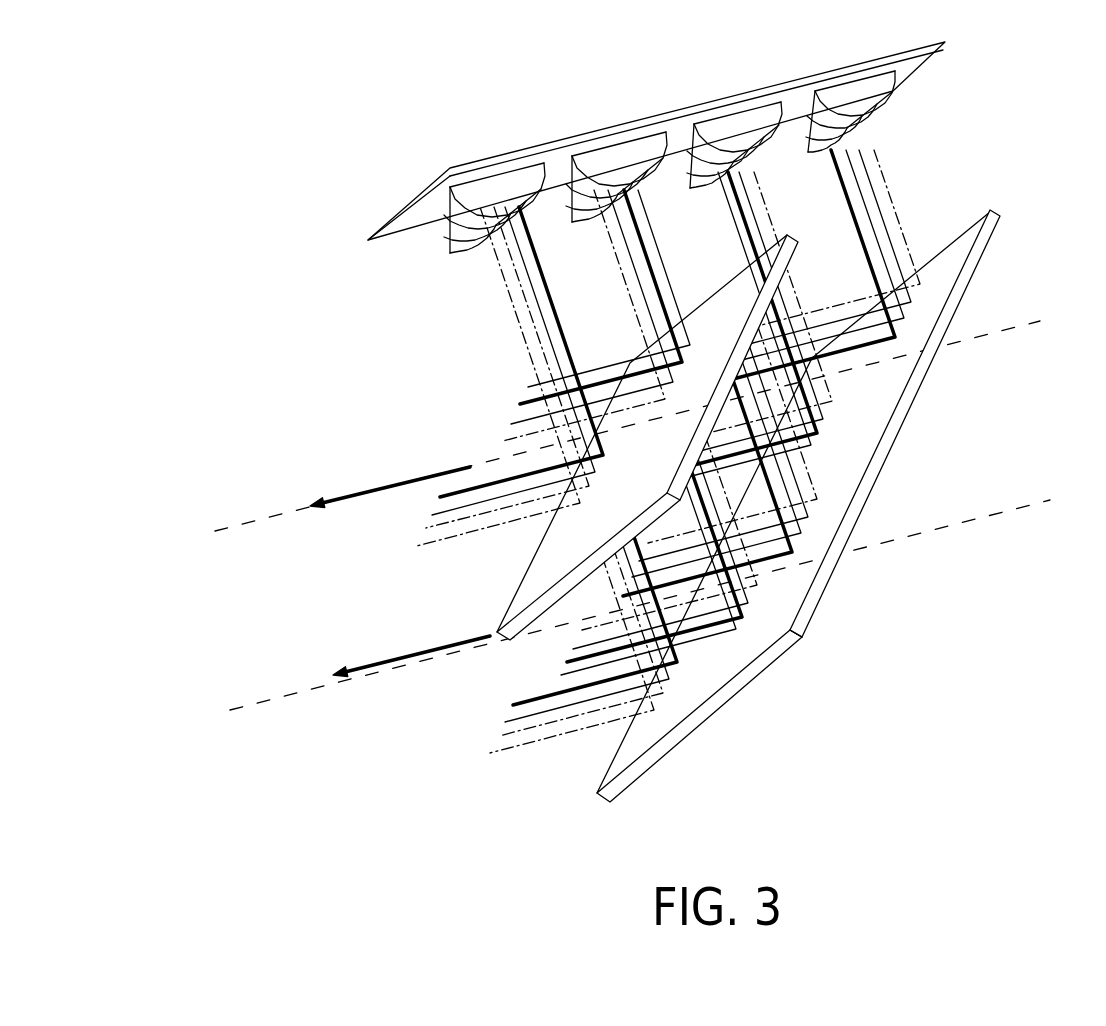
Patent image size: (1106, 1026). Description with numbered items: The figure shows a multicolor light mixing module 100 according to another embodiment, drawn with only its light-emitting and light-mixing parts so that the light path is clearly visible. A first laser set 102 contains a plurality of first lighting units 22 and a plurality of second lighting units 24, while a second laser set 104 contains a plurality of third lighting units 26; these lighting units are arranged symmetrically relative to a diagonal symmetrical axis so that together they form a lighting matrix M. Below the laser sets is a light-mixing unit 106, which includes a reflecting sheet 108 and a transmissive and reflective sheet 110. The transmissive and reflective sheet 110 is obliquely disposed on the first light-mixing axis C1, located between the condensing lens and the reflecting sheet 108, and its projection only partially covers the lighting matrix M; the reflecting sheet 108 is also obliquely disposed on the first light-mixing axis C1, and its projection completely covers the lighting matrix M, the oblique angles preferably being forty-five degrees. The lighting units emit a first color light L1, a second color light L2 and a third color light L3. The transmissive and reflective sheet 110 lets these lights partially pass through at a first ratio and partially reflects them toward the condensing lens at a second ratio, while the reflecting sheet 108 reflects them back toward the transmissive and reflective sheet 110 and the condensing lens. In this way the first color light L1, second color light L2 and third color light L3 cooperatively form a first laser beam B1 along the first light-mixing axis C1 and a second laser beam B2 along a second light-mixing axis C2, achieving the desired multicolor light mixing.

The multicolor light mixing module 100 is at (255, 178).
The first laser set 102 is at (845, 80).
The second laser set 104 is at (447, 188).
The first lighting unit 22 is at (872, 95).
The second lighting unit 24 is at (475, 183).
The third lighting unit 26 is at (462, 238).
The lighting matrix M is at (922, 99).
The first color light L1 is at (877, 160).
The second color light L2 is at (546, 296).
The third color light L3 is at (450, 378).
The reflecting sheet 108 is at (1000, 222).
The light-mixing unit 106 is at (850, 622).
The transmissive and reflective sheet 110 is at (528, 570).
The first laser beam B1 is at (338, 494).
The second laser beam B2 is at (358, 665).
The first light-mixing axis C1 is at (606, 440).
The second light-mixing axis C2 is at (619, 615).